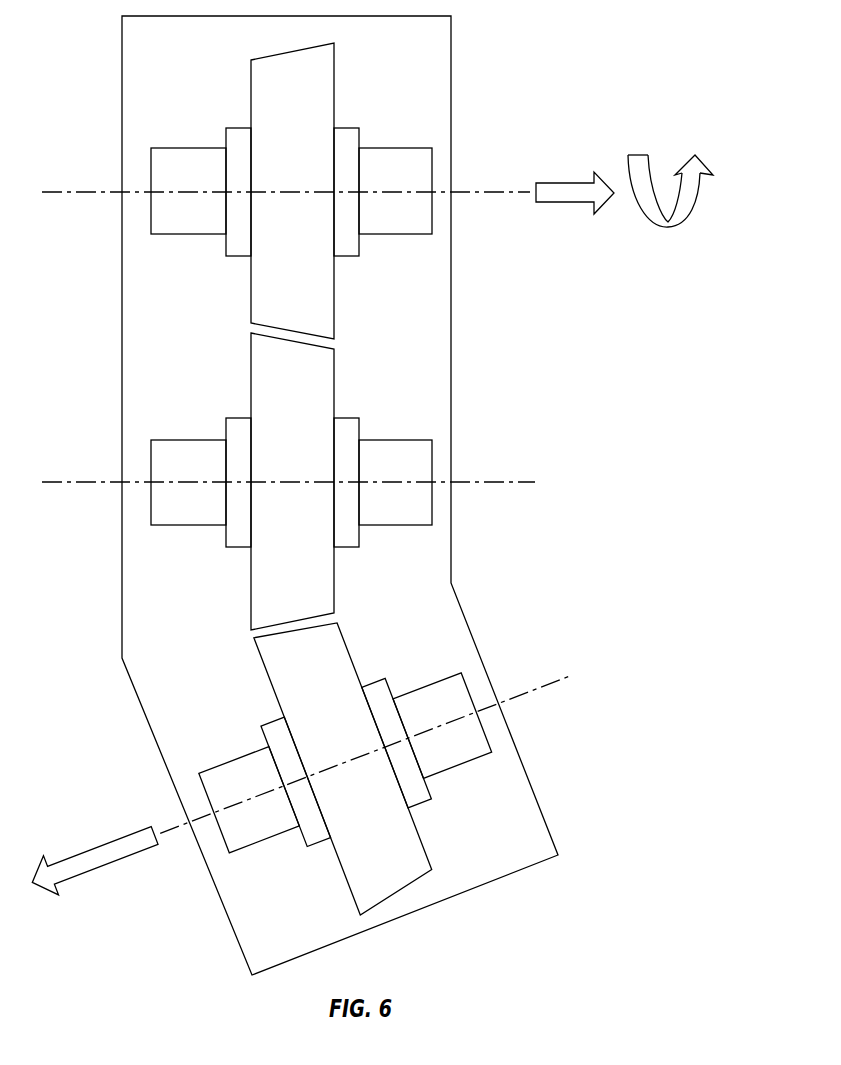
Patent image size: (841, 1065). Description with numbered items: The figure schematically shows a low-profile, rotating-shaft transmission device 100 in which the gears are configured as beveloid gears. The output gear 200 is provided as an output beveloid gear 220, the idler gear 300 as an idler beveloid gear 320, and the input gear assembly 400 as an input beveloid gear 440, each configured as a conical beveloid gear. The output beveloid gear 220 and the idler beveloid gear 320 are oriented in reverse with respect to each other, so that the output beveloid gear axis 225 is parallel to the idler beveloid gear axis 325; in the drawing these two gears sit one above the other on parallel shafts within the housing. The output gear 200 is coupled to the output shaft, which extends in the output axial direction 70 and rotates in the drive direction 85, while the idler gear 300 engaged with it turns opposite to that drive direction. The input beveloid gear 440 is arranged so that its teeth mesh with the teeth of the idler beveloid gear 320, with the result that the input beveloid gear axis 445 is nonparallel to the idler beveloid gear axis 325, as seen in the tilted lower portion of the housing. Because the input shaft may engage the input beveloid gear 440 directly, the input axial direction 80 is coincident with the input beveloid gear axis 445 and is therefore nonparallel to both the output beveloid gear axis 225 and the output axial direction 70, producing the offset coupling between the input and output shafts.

The low-profile, rotating-shaft transmission device 100 is at (503, 108).
The output axial direction 70 is at (562, 203).
The drive direction 85 is at (700, 197).
The input axial direction 80 is at (75, 880).
The output gear 200 is at (277, 204).
The output beveloid gear 220 is at (285, 295).
The output beveloid gear axis 225 is at (92, 195).
The idler gear 300 is at (317, 482).
The idler beveloid gear 320 is at (300, 537).
The idler beveloid gear axis 325 is at (501, 485).
The input gear assembly 400 is at (383, 791).
The input beveloid gear 440 is at (383, 830).
The input beveloid gear axis 445 is at (522, 697).